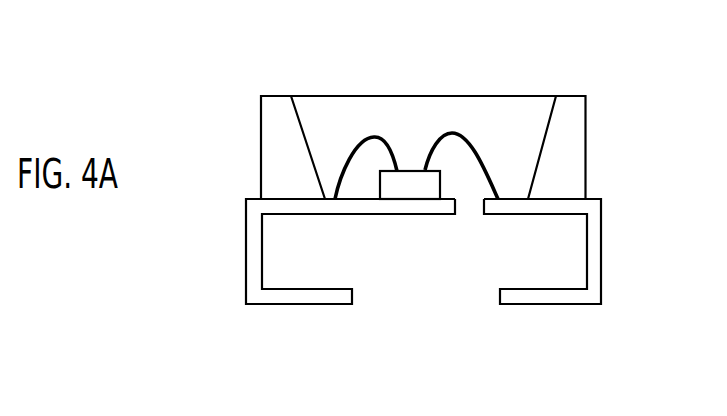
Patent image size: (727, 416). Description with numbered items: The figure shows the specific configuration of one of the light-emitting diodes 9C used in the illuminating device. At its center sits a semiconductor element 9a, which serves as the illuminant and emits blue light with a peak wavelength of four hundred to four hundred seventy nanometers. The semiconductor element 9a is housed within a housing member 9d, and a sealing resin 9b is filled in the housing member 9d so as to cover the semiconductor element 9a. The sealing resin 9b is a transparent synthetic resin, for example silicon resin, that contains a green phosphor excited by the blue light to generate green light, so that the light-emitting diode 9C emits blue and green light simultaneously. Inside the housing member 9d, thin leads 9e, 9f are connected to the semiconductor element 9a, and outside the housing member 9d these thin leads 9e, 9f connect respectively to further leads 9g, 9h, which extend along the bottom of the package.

The light-emitting diode 9C is at (569, 53).
The sealing resin 9b is at (423, 108).
The housing member 9d is at (578, 150).
The lead 9h is at (262, 250).
The lead 9g is at (595, 249).
The semiconductor element 9a is at (411, 190).
The thin lead 9f is at (341, 156).
The thin lead 9e is at (479, 168).